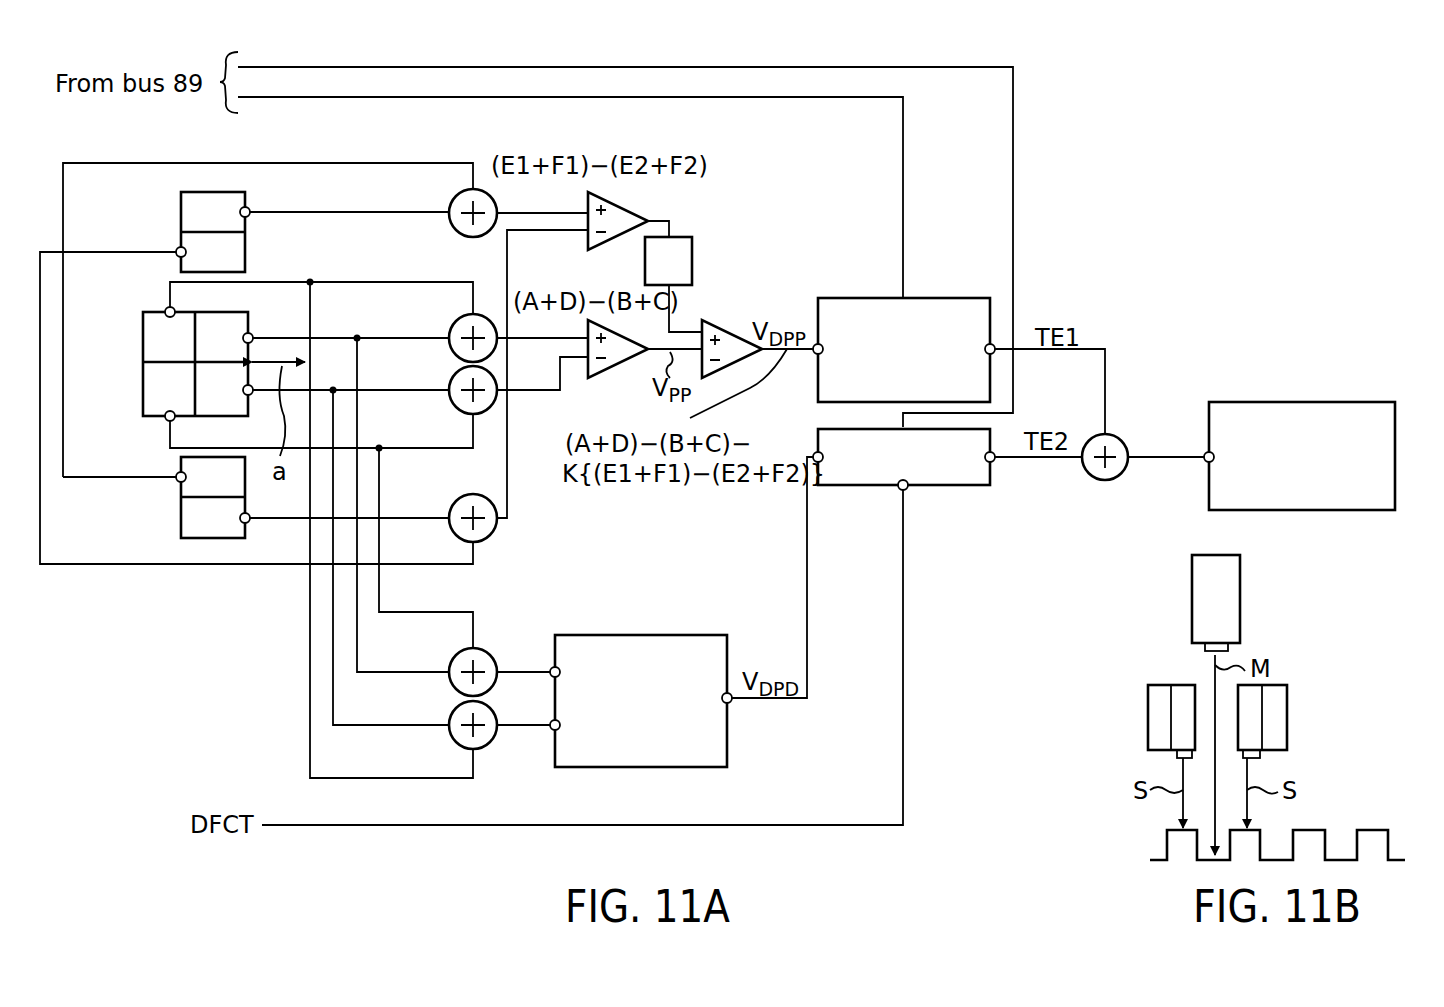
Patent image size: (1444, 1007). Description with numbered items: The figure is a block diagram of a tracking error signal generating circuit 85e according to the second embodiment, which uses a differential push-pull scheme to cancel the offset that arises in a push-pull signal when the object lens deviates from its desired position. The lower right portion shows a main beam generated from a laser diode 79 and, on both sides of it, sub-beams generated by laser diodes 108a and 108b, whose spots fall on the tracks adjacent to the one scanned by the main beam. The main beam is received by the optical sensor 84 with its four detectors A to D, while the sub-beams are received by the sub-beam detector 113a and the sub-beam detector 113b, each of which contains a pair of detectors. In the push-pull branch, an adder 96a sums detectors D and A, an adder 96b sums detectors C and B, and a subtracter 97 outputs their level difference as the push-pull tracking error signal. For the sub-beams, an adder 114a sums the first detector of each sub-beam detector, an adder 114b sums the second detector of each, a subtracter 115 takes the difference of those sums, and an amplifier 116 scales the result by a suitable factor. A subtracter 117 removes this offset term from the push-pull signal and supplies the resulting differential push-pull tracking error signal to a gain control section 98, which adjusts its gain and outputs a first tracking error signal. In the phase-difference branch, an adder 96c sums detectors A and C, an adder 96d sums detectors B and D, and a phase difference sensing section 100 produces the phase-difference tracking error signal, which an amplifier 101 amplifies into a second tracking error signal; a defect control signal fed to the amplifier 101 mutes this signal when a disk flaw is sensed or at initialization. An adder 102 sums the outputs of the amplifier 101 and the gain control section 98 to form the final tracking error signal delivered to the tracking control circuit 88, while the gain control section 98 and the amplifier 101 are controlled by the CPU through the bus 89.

In FIG. 11A, the bus 89 is at (625, 247).
In FIG. 11A, the sub-beam detector 113a is at (181, 208).
In FIG. 11A, the sub-beam detector 113b is at (181, 528).
In FIG. 11A, the optical sensor 84 is at (143, 354).
In FIG. 11A, the adder 114a is at (453, 198).
In FIG. 11A, the adder 114b is at (461, 497).
In FIG. 11A, the adder 96a is at (453, 324).
In FIG. 11A, the adder 96b is at (453, 378).
In FIG. 11A, the adder 96c is at (489, 654).
In FIG. 11A, the adder 96d is at (489, 746).
In FIG. 11A, the subtracter 115 is at (627, 196).
In FIG. 11A, the amplifier 116 is at (692, 245).
In FIG. 11A, the subtracter 97 is at (624, 378).
In FIG. 11A, the subtracter 117 is at (733, 308).
In FIG. 11A, the gain control section 98 is at (852, 298).
In FIG. 11A, the amplifier 101 is at (842, 490).
In FIG. 11A, the adder 102 is at (1107, 496).
In FIG. 11A, the tracking control circuit 88 is at (1302, 402).
In FIG. 11A, the phase difference sensing section 100 is at (643, 635).
In FIG. 11A, the tracking error signal generating circuit 85e is at (242, 606).
In FIG. 11B, the laser diode 79 is at (1240, 600).
In FIG. 11B, the laser diode 108a is at (1148, 718).
In FIG. 11B, the laser diode 108b is at (1287, 718).